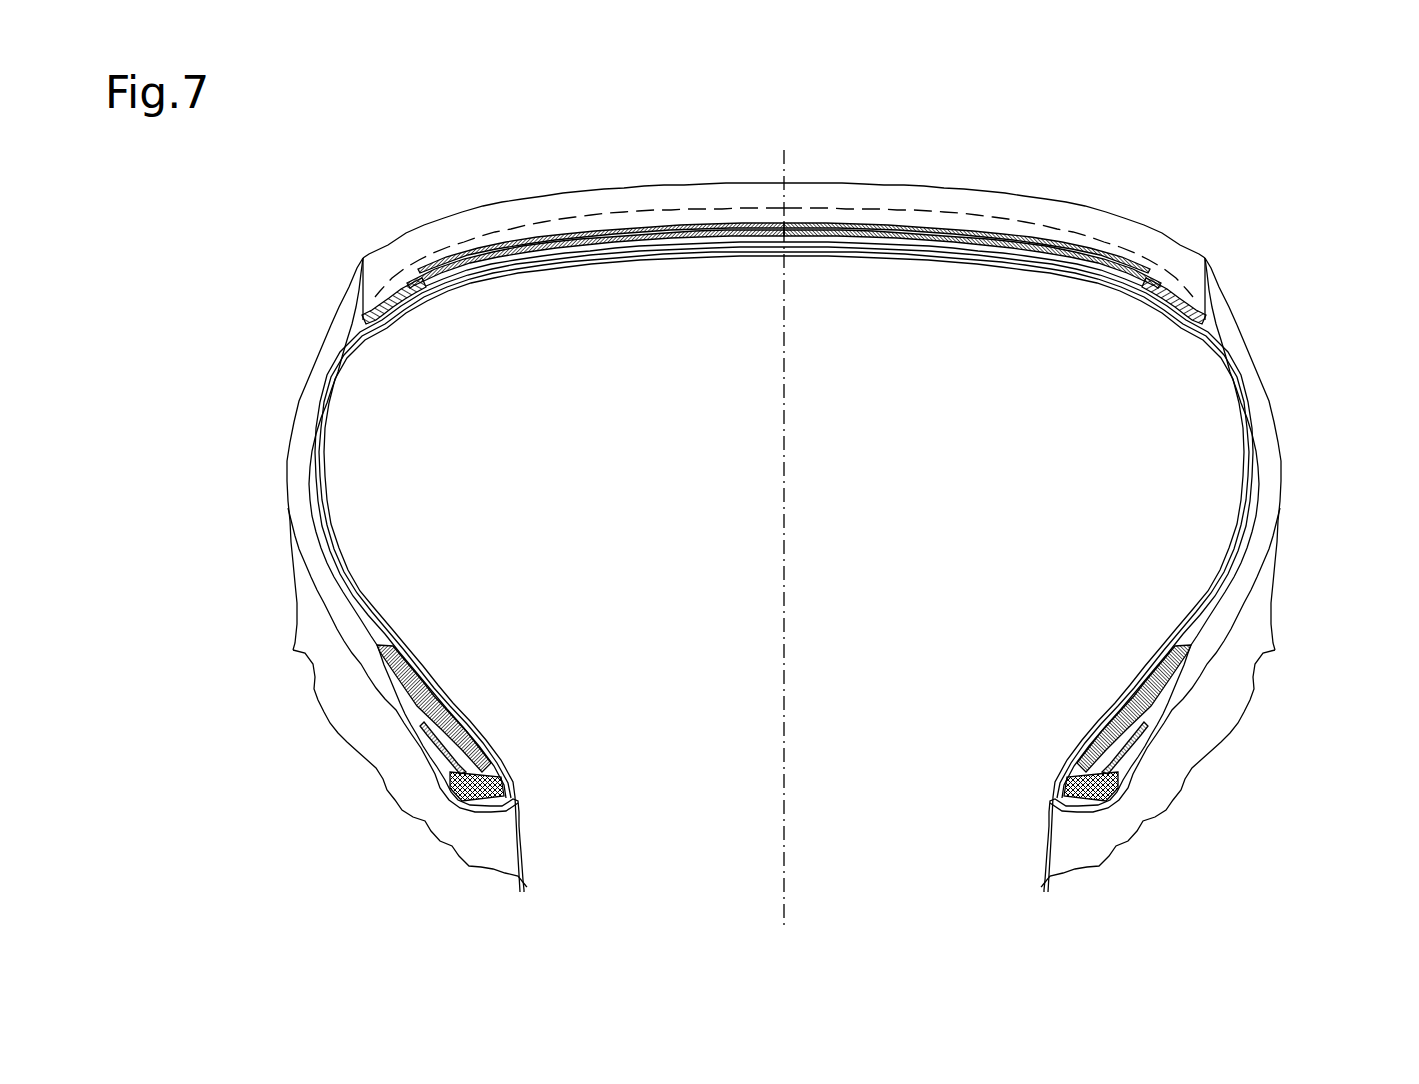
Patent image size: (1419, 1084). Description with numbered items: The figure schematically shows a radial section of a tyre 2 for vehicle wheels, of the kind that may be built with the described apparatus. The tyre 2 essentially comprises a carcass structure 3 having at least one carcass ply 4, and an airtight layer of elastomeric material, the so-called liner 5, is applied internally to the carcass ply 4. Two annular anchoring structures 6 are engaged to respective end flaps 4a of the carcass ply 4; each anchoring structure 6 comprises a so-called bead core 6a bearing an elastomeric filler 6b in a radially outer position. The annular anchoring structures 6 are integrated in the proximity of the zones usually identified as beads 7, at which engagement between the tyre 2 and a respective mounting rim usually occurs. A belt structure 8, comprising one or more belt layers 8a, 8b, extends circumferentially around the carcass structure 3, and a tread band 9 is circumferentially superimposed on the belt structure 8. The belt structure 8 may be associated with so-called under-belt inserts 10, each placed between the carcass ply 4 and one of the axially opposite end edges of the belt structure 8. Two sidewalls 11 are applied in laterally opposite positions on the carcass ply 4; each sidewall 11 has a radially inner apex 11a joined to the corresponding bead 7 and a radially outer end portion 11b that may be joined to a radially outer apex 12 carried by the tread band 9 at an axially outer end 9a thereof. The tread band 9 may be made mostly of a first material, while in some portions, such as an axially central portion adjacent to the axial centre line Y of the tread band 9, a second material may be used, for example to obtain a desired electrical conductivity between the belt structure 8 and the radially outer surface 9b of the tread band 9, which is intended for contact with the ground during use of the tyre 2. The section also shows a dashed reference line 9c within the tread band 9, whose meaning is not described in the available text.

The tyre 2 is at (262, 520).
The carcass structure 3 is at (310, 464).
The carcass ply 4 is at (351, 598).
The end flap of the carcass ply 4a is at (445, 765).
The liner 5 is at (453, 293).
The annular anchoring structure 6 is at (784, 757).
The bead core 6a is at (513, 783).
The elastomeric filler 6b is at (438, 733).
The bead 7 is at (497, 738).
The belt structure 8 is at (784, 181).
The belt layer 8a is at (607, 230).
The belt layer 8b is at (633, 233).
The tread band 9 is at (787, 191).
The axially outer end of the tread band 9a is at (363, 258).
The radially outer surface of the tread band 9b is at (853, 180).
The tread base line 9c is at (943, 210).
The under-belt insert 10 is at (413, 283).
The sidewall 11 is at (298, 418).
The radially inner apex of the sidewall 11a is at (375, 665).
The radially outer end portion of the sidewall 11b is at (340, 307).
The radially outer apex 12 is at (347, 283).
The axial centre line of the tread band Y is at (784, 167).